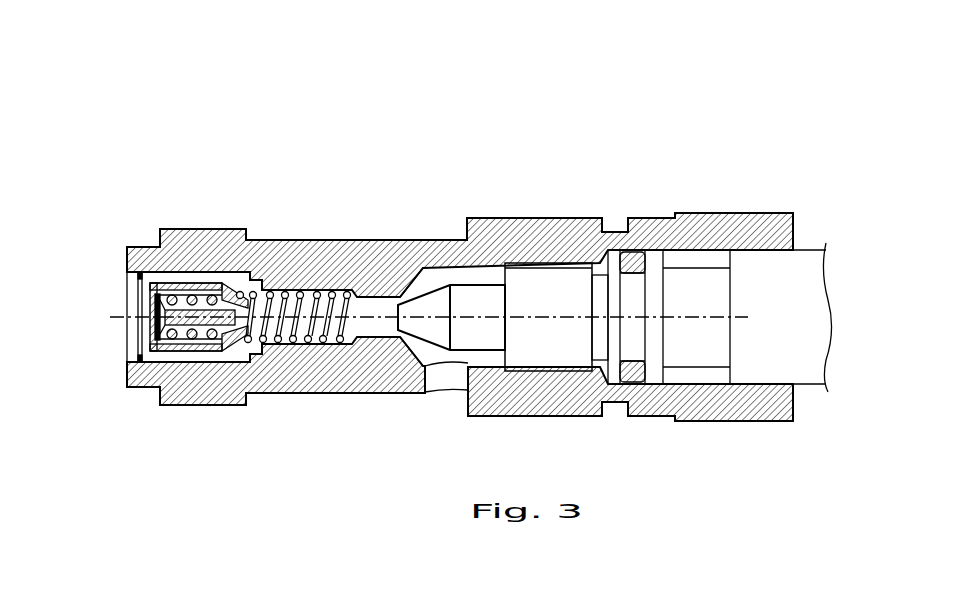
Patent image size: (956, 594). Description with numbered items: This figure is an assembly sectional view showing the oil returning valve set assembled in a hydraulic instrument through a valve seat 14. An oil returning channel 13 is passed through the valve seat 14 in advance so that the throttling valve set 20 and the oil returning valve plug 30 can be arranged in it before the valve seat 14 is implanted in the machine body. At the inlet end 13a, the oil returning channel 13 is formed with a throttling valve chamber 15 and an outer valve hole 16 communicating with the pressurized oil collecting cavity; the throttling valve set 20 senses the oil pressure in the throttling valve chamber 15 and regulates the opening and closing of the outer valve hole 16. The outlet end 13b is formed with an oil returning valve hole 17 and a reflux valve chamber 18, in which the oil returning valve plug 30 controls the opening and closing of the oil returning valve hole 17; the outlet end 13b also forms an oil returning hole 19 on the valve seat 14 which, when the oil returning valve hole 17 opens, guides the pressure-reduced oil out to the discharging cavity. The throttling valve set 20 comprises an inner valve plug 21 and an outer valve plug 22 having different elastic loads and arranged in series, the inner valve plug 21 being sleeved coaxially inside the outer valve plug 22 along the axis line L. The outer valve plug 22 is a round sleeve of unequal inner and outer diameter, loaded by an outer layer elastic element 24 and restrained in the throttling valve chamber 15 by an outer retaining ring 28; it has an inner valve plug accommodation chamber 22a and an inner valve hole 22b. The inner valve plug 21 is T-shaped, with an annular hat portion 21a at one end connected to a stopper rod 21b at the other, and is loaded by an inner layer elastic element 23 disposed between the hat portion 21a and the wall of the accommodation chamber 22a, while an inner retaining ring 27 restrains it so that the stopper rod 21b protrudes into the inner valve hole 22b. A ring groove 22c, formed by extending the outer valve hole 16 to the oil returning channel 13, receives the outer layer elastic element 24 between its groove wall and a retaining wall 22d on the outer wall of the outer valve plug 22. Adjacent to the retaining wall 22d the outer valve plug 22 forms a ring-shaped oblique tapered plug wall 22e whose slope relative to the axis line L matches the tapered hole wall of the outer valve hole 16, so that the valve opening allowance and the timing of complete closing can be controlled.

The oil returning channel 13 is at (353, 262).
The inlet end 13a is at (123, 348).
The outlet end 13b is at (455, 400).
The valve seat 14 is at (375, 266).
The throttling valve chamber 15 is at (199, 353).
The outer valve hole 16 is at (280, 350).
The oil returning valve hole 17 is at (425, 300).
The reflux valve chamber 18 is at (485, 266).
The oil returning hole 19 is at (435, 383).
The throttling valve set 20 is at (197, 167).
The inner valve plug 21 is at (176, 239).
The hat portion 21a is at (148, 282).
The stopper rod 21b is at (235, 232).
The outer valve plug 22 is at (241, 328).
The inner valve plug accommodation chamber 22a is at (181, 346).
The inner valve hole 22b is at (245, 350).
The ring groove 22c is at (303, 290).
The retaining wall 22d is at (252, 290).
The oblique tapered plug wall 22e is at (217, 352).
The inner layer elastic element 23 is at (221, 232).
The outer layer elastic element 24 is at (318, 348).
The inner retaining ring 27 is at (150, 328).
The outer retaining ring 28 is at (140, 366).
The oil returning valve plug 30 is at (551, 297).
The axis line L is at (120, 316).